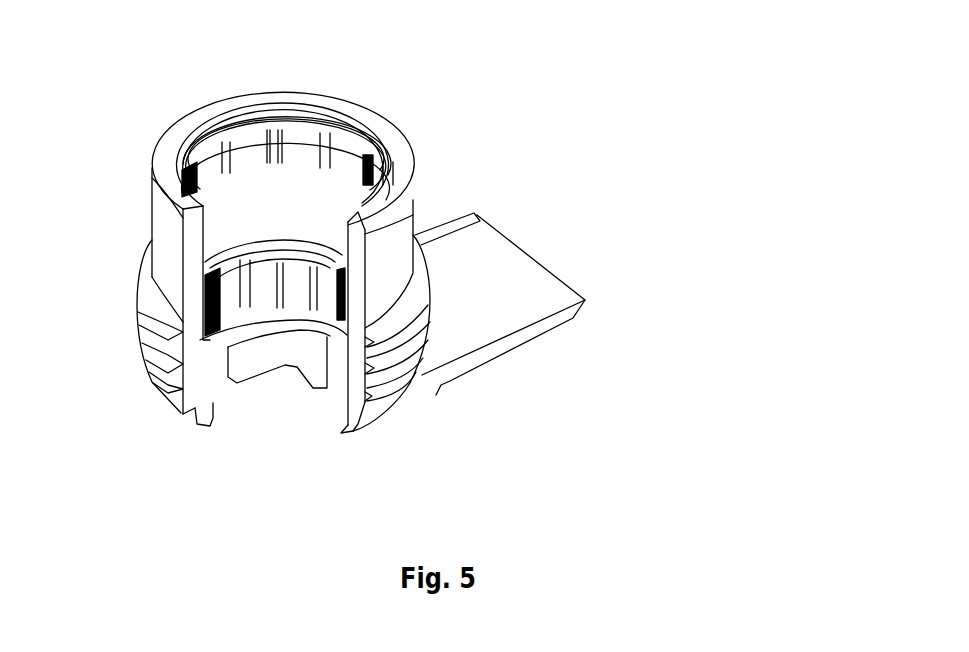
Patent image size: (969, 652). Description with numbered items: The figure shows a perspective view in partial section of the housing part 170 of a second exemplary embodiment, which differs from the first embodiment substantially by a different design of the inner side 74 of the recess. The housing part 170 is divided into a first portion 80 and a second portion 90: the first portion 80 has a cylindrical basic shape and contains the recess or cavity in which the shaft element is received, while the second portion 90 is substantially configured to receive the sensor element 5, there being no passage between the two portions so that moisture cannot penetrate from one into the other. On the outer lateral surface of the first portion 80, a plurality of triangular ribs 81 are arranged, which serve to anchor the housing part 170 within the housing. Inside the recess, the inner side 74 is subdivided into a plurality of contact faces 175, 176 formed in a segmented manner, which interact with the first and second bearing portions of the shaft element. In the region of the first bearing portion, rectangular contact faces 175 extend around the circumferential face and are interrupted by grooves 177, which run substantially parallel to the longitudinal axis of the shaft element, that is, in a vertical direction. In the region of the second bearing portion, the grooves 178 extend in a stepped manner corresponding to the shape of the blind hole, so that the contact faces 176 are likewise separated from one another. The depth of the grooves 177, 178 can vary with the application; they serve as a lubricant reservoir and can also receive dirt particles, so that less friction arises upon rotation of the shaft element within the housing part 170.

The housing part 170 is at (598, 121).
The sensor element 5 is at (397, 163).
The first portion 80 is at (386, 232).
The triangular ribs 81 is at (419, 251).
The second portion 90 is at (500, 271).
The inner side 74 is at (282, 209).
The contact faces 175 is at (308, 144).
The contact faces 176 is at (300, 290).
The grooves 177 is at (264, 137).
The grooves 178 is at (282, 287).